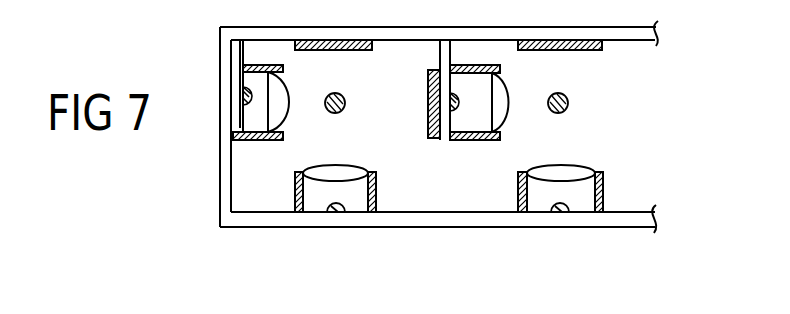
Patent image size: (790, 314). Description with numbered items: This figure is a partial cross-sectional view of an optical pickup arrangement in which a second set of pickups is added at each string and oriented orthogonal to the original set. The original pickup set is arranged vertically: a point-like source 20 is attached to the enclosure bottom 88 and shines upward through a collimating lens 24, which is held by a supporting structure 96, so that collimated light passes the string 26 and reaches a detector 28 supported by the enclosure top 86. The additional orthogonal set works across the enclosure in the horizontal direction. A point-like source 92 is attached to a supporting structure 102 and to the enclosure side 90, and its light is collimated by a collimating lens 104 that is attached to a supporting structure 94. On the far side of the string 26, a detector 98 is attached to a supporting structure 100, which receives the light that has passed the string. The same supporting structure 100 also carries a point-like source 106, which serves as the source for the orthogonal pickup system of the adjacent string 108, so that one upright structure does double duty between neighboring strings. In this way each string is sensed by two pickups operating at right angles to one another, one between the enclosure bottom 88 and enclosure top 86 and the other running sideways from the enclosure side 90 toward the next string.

The point-like source 20 is at (328, 210).
The collimating lens 24 is at (322, 177).
The string 26 is at (343, 97).
The detector 28 is at (348, 43).
The enclosure top 86 is at (637, 35).
The enclosure bottom 88 is at (242, 218).
The enclosure side 90 is at (221, 142).
The point-like source 92 is at (243, 90).
The supporting structure 94 is at (258, 65).
The supporting structure 96 is at (297, 187).
The detector 98 is at (432, 140).
The supporting structure 100 is at (450, 53).
The supporting structure 102 is at (235, 52).
The collimating lens 104 is at (280, 112).
The point-like source 106 is at (458, 102).
The adjacent string 108 is at (568, 102).